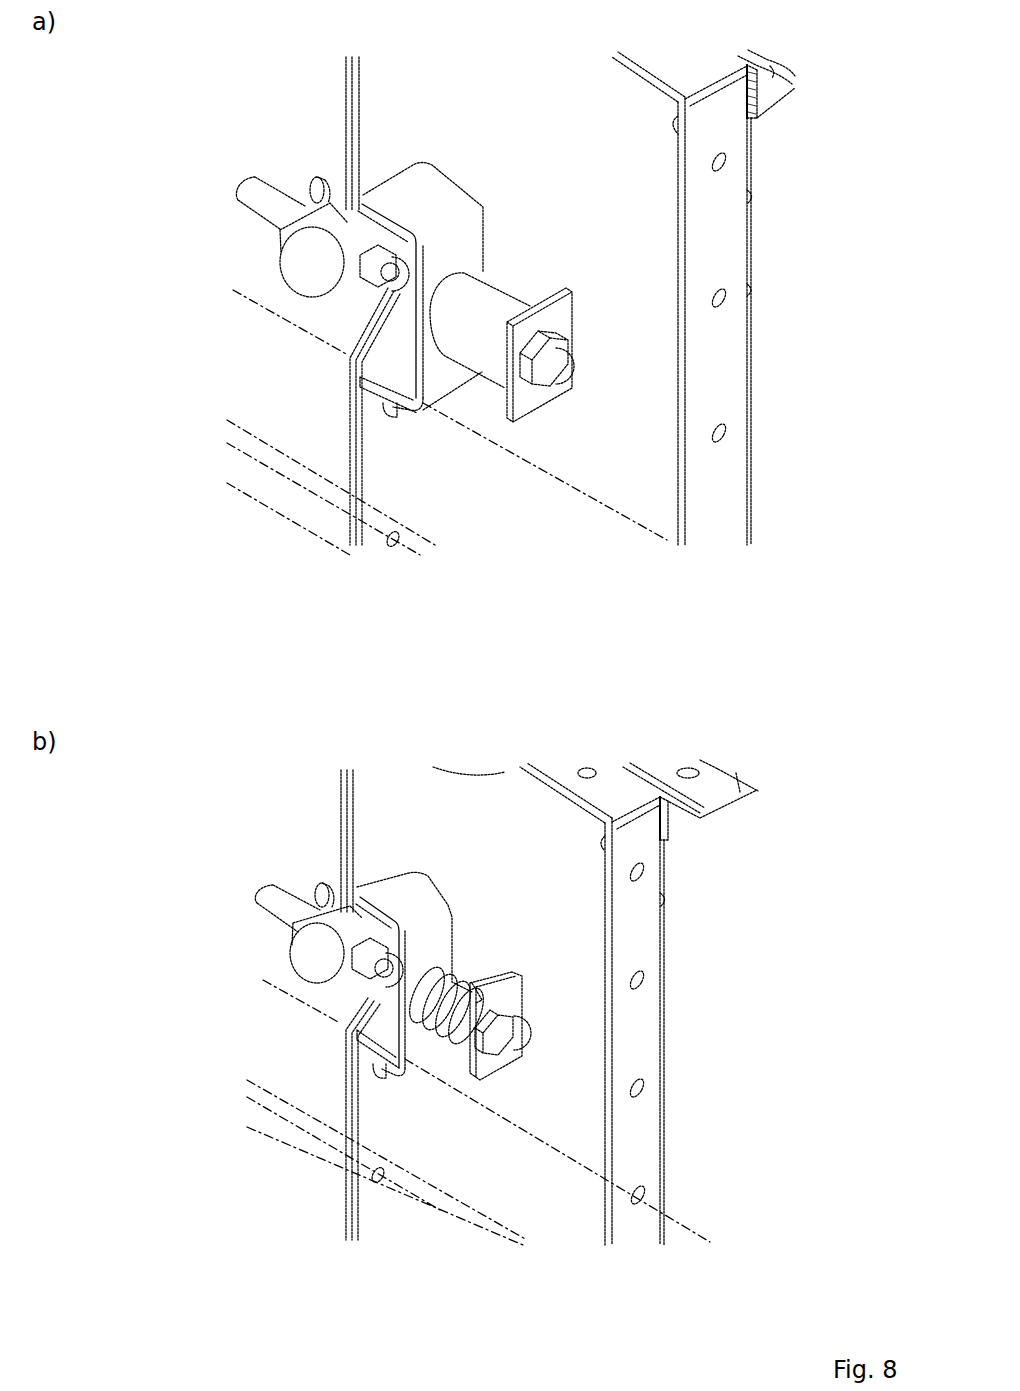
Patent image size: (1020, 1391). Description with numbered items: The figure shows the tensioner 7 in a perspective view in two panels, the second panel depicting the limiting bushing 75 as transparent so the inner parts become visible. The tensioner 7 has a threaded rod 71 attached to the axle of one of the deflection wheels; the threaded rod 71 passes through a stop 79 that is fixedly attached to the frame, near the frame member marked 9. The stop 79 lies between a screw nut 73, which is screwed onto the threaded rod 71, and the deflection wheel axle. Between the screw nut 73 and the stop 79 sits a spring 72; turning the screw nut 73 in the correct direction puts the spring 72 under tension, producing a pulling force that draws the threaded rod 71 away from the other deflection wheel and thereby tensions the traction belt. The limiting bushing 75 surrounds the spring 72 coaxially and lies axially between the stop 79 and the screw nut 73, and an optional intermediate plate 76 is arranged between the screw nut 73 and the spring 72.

The tensioner 7 is at (152, 247).
The mounting rail 9 is at (496, 169).
The threaded rod 71 is at (407, 292).
The spring 72 is at (457, 1030).
The screw nut 73 is at (563, 360).
The limiting bushing 75 is at (487, 338).
The intermediate plate 76 is at (565, 316).
The stop 79 is at (466, 262).